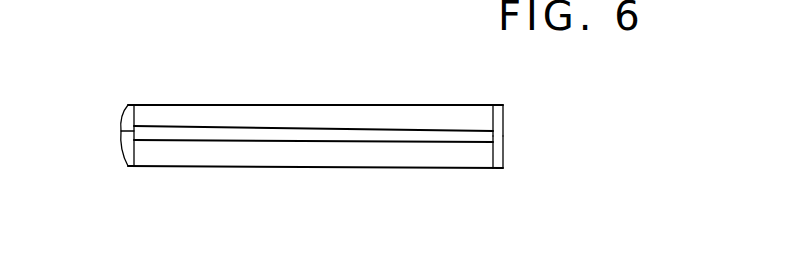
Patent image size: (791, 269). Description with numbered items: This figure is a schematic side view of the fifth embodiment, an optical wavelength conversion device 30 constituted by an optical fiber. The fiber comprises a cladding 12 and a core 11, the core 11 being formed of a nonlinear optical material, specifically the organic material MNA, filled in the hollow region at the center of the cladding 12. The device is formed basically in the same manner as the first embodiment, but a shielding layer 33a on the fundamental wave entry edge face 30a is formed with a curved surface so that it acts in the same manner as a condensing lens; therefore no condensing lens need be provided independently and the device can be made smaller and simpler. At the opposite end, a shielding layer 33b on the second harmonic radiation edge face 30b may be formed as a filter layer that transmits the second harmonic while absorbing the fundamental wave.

The optical wavelength conversion device 30 is at (322, 68).
The cladding 12 is at (413, 153).
The core 11 is at (306, 134).
The fundamental wave entry edge face 30a is at (121, 128).
The second harmonic radiation edge face 30b is at (498, 135).
The shielding layer 33a is at (124, 141).
The shielding layer 33b is at (496, 158).